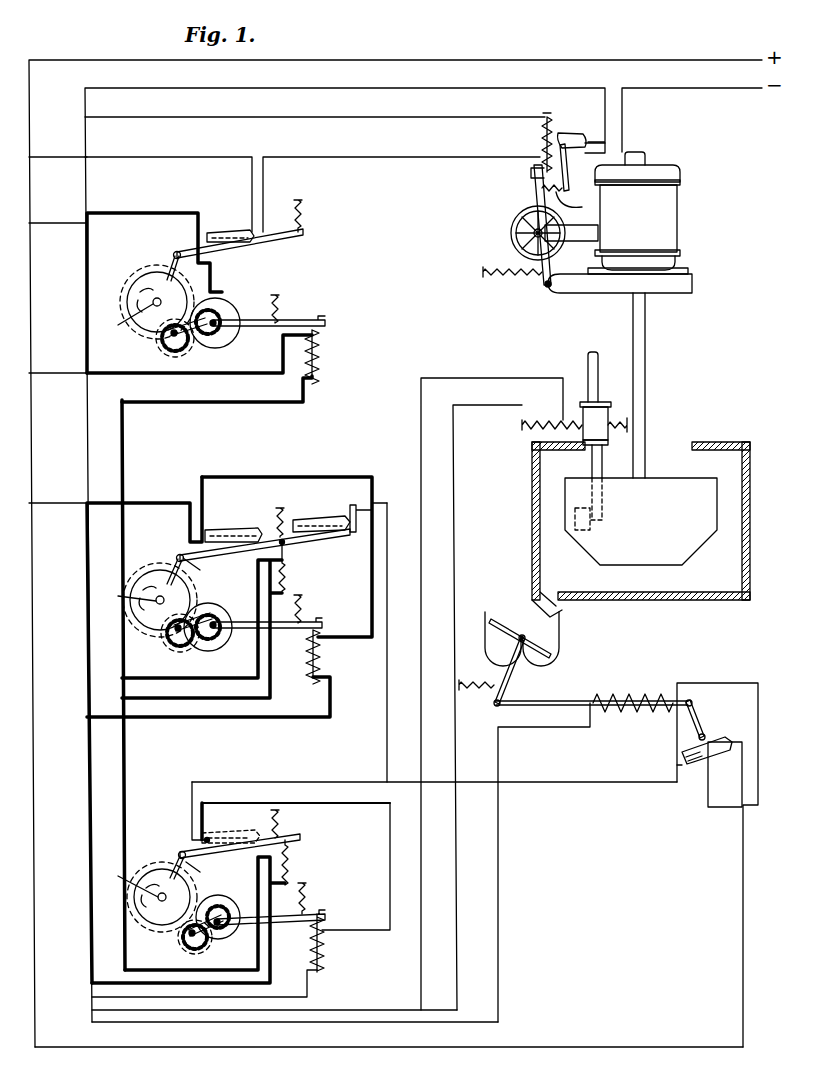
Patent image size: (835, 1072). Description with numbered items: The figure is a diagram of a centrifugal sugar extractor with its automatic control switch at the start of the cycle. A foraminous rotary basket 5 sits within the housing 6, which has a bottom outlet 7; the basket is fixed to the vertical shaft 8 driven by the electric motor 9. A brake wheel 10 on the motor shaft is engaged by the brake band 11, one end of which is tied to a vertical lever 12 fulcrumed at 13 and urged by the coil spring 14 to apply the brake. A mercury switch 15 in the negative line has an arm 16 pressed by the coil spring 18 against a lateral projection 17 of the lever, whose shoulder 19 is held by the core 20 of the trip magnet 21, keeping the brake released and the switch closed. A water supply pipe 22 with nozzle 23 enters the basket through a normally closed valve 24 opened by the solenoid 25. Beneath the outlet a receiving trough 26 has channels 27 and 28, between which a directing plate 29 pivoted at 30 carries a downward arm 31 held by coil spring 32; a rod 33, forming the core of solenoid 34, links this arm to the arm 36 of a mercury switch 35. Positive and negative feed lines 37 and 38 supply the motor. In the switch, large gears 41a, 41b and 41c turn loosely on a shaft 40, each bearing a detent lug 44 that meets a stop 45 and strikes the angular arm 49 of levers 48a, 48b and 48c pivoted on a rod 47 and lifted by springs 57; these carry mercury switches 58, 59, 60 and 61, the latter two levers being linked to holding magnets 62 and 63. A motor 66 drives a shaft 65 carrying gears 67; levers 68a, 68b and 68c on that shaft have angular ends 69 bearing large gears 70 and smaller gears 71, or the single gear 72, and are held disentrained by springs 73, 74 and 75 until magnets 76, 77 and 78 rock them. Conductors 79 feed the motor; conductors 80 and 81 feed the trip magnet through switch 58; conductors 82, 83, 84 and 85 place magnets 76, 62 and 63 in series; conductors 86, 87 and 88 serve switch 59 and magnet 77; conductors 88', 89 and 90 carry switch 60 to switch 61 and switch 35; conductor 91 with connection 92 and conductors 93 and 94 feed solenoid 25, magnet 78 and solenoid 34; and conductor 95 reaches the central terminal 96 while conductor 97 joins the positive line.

The foraminous rotary basket 5 is at (641, 521).
The housing or curb 6 is at (530, 491).
The outlet 7 is at (566, 606).
The vertical shaft 8 is at (646, 365).
The electric motor 9 is at (637, 211).
The drum or wheel 10 is at (689, 270).
The brake band 11 is at (616, 284).
The lever 12 is at (535, 193).
The fulcrum 13 is at (520, 240).
The coil spring 14 is at (497, 278).
The oscillatable mercury switch 15 is at (571, 135).
The arm 16 is at (580, 160).
The lateral projection 17 is at (563, 188).
The coil spring 18 is at (562, 206).
The shoulder 19 is at (531, 168).
The core 20 is at (548, 115).
The solenoid type trip magnet 21 is at (540, 132).
The water supply pipe 22 is at (605, 385).
The nozzle 23 is at (591, 527).
The normally closed valve 24 is at (610, 410).
The solenoid 25 is at (537, 420).
The receiving trough 26 is at (476, 634).
The channel 27 is at (551, 665).
The channel 28 is at (490, 664).
The oscillatable directing plate 29 is at (536, 649).
The pivot 30 is at (521, 634).
The arm 31 is at (511, 681).
The coil spring 32 is at (478, 690).
The rod 33 is at (575, 706).
The solenoid 34 is at (656, 693).
The oscillatable mercury switch 35 is at (718, 751).
The arm 36 is at (706, 722).
The positive feed line 37 is at (33, 725).
The negative feed line 38 is at (78, 802).
The shaft 40 is at (126, 600).
The large gear 41a is at (135, 296).
The large gear 41b is at (152, 580).
The large gear 41c is at (154, 874).
The detent lug 44 is at (150, 286).
The stop 45 is at (130, 300).
The second transverse rod 47 is at (178, 252).
The lever 48a is at (284, 238).
The lever 48b is at (318, 541).
The lever 48c is at (302, 836).
The angular downwardly projecting arm 49 is at (202, 720).
The spring 57 is at (304, 212).
The mercury switch 58 is at (235, 231).
The mercury switch 59 is at (236, 532).
The mercury switch 60 is at (359, 509).
The mercury switch 61 is at (245, 832).
The solenoid magnet 62 is at (290, 583).
The solenoid magnet 63 is at (292, 866).
The shaft 65 is at (212, 316).
The electric motor 66 is at (236, 305).
The gear 67 is at (211, 348).
The lever 68a is at (256, 327).
The lever 68b is at (245, 631).
The lever 68c is at (247, 926).
The angular end portion 69 is at (202, 622).
The large gear 70 is at (175, 357).
The smaller gear 71 is at (165, 346).
The rotation transmitting gear 72 is at (190, 942).
The spring 73 is at (282, 305).
The spring 74 is at (305, 606).
The spring 75 is at (308, 897).
The solenoid magnet 76 is at (328, 340).
The solenoid magnet 77 is at (326, 665).
The solenoid magnet 78 is at (326, 953).
The conductors 79 is at (127, 222).
The conductor 80 is at (375, 120).
The conductor 81 is at (418, 160).
The conductor 82 is at (124, 752).
The conductor 83 is at (165, 402).
The conductor 84 is at (110, 368).
The conductor 85 is at (190, 985).
The conductor 86 is at (375, 490).
The conductor 87 is at (268, 718).
The conductor 88 is at (144, 728).
The conductor 88' is at (321, 505).
The conductor 89 is at (388, 737).
The conductor 90 is at (572, 783).
The conductor 91 is at (421, 611).
The connection 92 is at (392, 905).
The conductor 93 is at (457, 943).
The conductor 94 is at (499, 975).
The conductor 95 is at (770, 670).
The central terminal 96 is at (698, 768).
The conductor 97 is at (662, 1047).